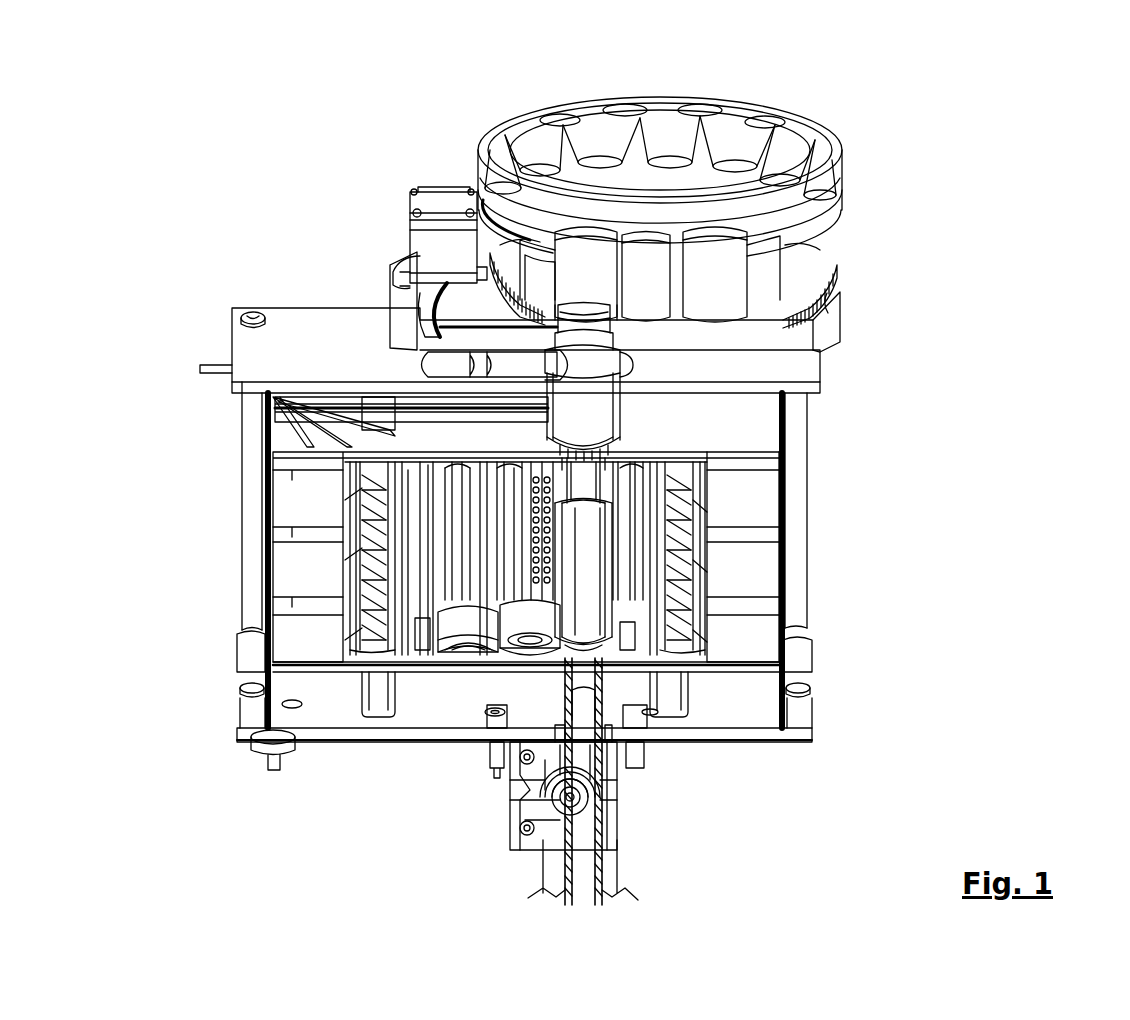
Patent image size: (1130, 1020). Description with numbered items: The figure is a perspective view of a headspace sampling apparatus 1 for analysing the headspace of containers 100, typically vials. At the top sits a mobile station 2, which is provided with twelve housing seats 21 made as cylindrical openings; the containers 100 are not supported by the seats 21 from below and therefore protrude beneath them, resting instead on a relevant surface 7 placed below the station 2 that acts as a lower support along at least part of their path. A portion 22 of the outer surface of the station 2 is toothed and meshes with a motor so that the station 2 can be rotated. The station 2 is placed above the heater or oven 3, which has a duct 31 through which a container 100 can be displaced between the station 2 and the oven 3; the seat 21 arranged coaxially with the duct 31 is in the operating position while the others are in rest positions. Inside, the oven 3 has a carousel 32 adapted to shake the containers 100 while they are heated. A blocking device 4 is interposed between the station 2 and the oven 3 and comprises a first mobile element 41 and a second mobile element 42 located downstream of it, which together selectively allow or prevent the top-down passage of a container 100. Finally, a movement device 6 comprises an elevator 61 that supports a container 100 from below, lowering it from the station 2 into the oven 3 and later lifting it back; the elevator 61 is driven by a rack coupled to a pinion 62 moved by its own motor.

The headspace sampling apparatus 1 is at (941, 334).
The mobile station 2 is at (820, 212).
The housing seats 21 is at (757, 140).
The toothed portion of the outer surface of the station 22 is at (828, 275).
The heater (oven) 3 is at (282, 577).
The duct 31 is at (595, 417).
The carousel 32 is at (463, 650).
The blocking device 4 is at (192, 252).
The first mobile element 41 is at (447, 310).
The second mobile element 42 is at (447, 367).
The movement device 6 is at (641, 822).
The elevator 61 is at (590, 869).
The pinion 62 is at (525, 787).
The relevant surface 7 is at (845, 290).
The container 100 is at (590, 572).